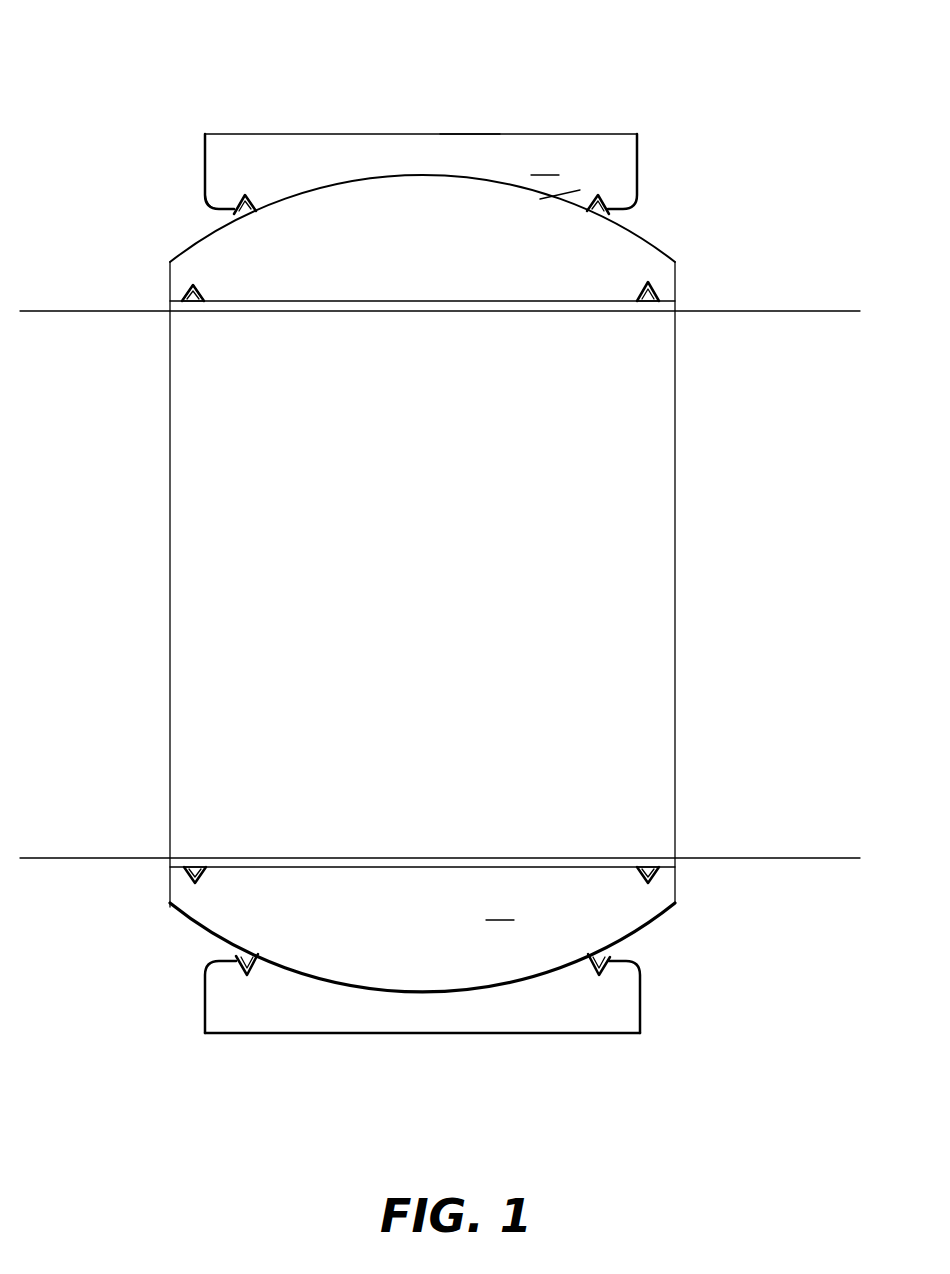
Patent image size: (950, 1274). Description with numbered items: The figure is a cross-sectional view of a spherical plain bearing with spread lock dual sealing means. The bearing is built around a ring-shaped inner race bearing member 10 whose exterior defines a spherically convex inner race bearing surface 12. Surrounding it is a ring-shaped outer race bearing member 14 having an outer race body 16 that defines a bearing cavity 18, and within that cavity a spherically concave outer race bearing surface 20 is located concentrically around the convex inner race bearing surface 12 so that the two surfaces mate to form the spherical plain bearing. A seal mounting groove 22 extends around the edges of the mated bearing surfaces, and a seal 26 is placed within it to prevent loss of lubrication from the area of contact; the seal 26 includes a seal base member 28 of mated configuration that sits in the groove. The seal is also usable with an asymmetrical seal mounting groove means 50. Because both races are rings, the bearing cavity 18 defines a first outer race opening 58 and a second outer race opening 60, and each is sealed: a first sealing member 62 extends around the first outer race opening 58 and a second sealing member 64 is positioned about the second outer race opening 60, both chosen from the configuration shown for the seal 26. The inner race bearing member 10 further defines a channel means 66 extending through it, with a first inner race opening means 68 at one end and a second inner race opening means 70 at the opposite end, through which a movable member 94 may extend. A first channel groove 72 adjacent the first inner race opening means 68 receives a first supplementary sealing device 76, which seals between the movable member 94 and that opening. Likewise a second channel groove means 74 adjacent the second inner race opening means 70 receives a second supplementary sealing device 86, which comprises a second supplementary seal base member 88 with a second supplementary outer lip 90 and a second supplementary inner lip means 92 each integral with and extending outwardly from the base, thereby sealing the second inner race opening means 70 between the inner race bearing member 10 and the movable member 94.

The inner race bearing member 10 is at (422, 961).
The inner race bearing surface 12 is at (372, 178).
The outer race bearing member 14 is at (421, 171).
The outer race body 16 is at (640, 163).
The bearing cavity 18 is at (459, 178).
The outer race bearing surface 20 is at (560, 198).
The seal mounting groove 22 is at (238, 200).
The seal 26 is at (201, 228).
The seal base member 28 is at (604, 197).
The asymmetrical seal mounting groove means 50 is at (252, 200).
The first outer race opening 58 is at (626, 218).
The second outer race opening 60 is at (210, 217).
The first sealing member 62 is at (592, 208).
The second sealing member 64 is at (250, 210).
The channel means 66 is at (447, 303).
The first inner race opening means 68 is at (657, 457).
The second inner race opening means 70 is at (190, 652).
The first channel groove 72 is at (651, 282).
The second channel groove means 74 is at (200, 300).
The first supplementary sealing device 76 is at (647, 302).
The second supplementary sealing device 86 is at (193, 302).
The second supplementary seal base member 88 is at (194, 288).
The second supplementary outer lip 90 is at (192, 287).
The second supplementary inner lip means 92 is at (203, 290).
The movable member 94 is at (808, 310).